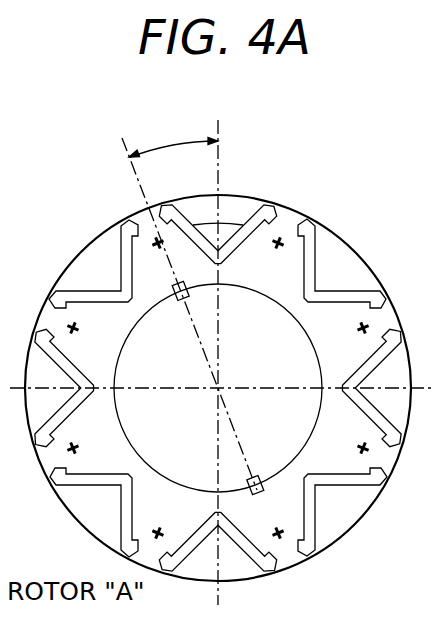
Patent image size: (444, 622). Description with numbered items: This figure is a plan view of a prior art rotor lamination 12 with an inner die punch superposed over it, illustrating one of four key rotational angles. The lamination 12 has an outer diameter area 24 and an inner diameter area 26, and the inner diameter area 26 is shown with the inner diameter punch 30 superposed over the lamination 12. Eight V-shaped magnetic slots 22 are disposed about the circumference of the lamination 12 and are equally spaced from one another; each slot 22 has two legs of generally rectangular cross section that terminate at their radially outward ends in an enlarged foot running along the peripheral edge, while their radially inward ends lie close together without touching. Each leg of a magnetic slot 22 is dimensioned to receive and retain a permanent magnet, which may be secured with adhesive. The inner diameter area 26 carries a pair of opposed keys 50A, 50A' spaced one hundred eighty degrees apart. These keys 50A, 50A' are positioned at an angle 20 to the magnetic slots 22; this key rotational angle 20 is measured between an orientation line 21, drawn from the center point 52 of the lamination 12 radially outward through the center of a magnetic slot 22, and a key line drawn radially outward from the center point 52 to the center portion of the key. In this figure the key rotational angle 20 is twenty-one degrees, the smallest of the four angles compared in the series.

The rotor lamination 12 is at (312, 206).
The key rotational angle 20 is at (137, 137).
The orientation line 21 is at (221, 130).
The magnetic slot 22 is at (308, 260).
The outer diameter area 24 is at (352, 328).
The inner diameter area 26 is at (287, 420).
The inner diameter punch 30 is at (157, 427).
The key 50A is at (108, 263).
The key 50A' is at (285, 545).
The center point 52 is at (222, 383).